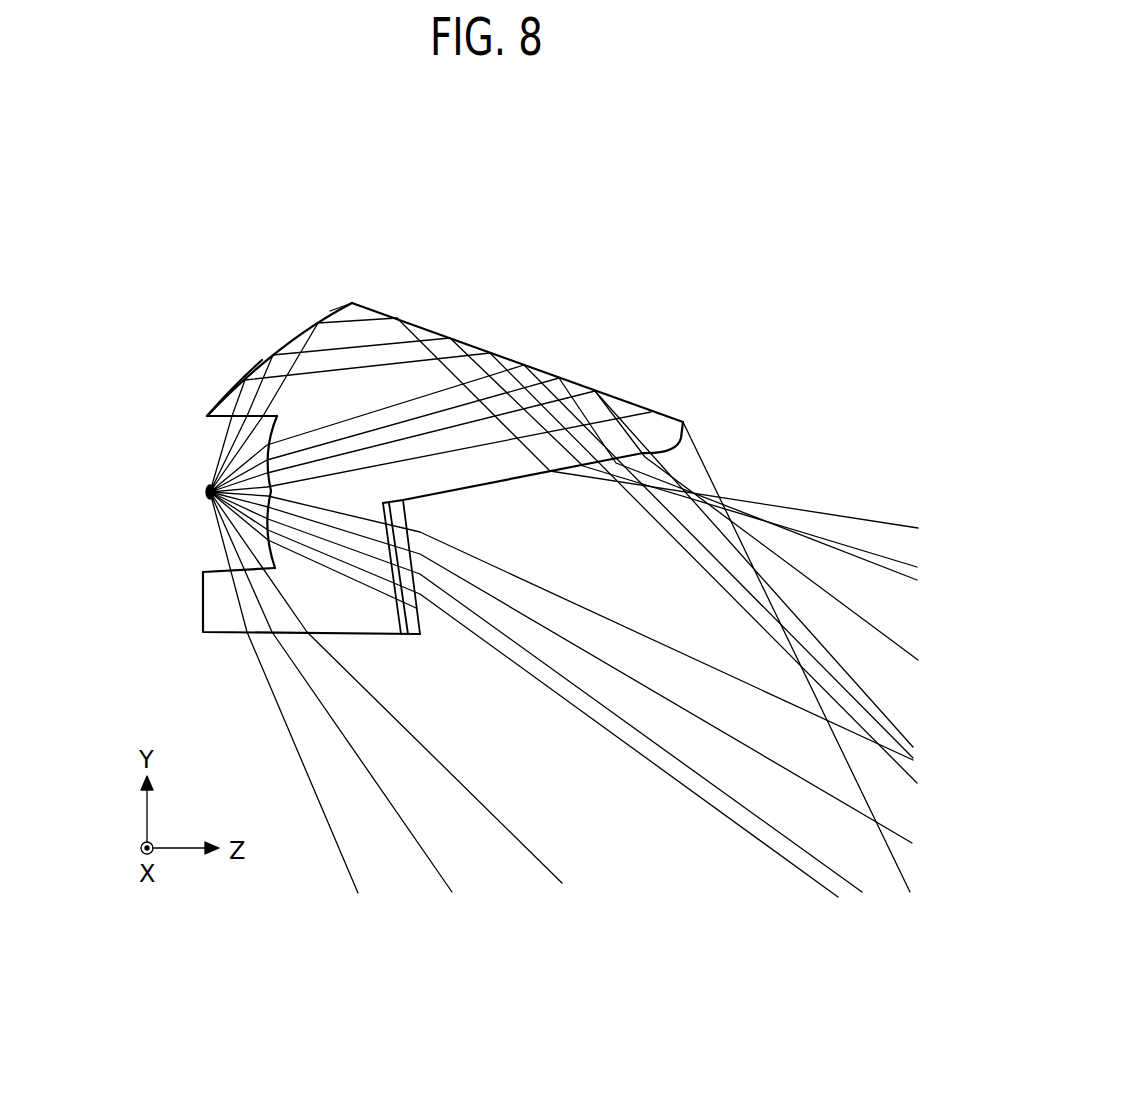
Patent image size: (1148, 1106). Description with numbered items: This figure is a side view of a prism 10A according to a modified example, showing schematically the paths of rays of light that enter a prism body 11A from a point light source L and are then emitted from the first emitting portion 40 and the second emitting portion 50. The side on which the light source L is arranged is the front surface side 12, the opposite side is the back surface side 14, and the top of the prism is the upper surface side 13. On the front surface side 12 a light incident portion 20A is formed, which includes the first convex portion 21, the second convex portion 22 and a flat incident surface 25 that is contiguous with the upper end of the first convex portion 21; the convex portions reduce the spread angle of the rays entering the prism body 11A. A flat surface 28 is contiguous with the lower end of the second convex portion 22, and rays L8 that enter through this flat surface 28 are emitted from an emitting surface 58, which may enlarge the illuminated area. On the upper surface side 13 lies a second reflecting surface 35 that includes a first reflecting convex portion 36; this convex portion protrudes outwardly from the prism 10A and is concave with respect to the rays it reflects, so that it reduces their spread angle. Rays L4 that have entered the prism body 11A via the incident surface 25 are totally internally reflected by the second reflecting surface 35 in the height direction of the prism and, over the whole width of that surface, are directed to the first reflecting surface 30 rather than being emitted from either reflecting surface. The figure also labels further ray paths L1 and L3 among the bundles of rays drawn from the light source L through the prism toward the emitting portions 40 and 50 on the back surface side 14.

The prism 10A is at (517, 240).
The upper surface side 13 is at (357, 288).
The first reflecting convex portion 36 is at (255, 350).
The second reflecting surface 35 is at (252, 376).
The flat incident surface 25 is at (212, 418).
The first convex portion 21 is at (266, 438).
The second convex portion 22 is at (266, 532).
The prism body 11A is at (488, 350).
The first reflecting surface 30 is at (616, 397).
The first emitting portion 40 is at (480, 488).
The second emitting portion 50 is at (425, 622).
The flat surface 28 is at (206, 565).
The emitting surface 58 is at (235, 632).
The back surface side 14 is at (488, 550).
The front surface side 12 is at (130, 470).
The light source L is at (205, 492).
The light incident portion 20A is at (188, 521).
The rays L4 is at (340, 344).
The light ray L1 is at (305, 433).
The light ray L3 is at (322, 558).
The rays L8 is at (238, 597).